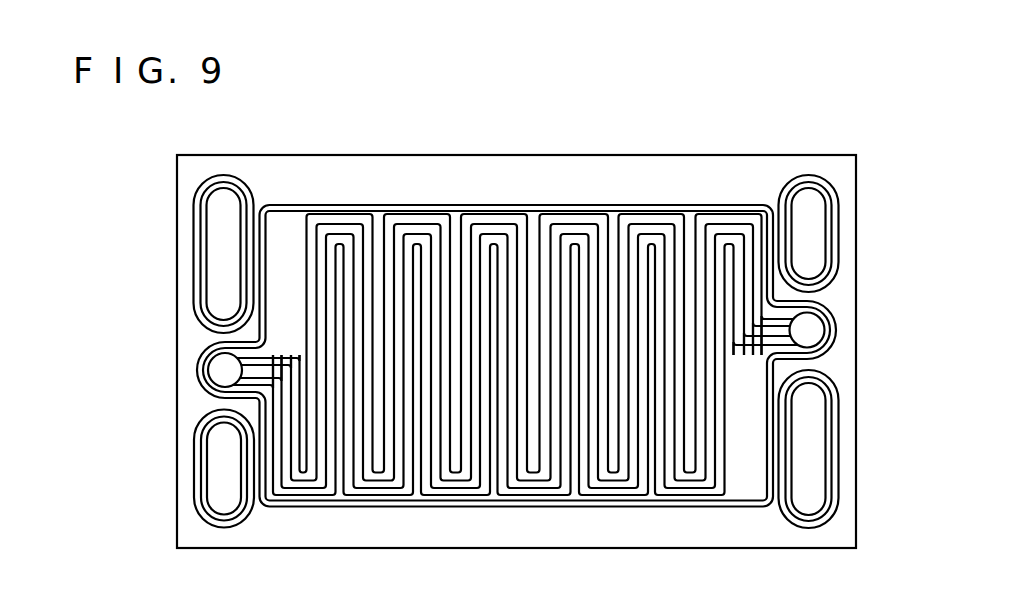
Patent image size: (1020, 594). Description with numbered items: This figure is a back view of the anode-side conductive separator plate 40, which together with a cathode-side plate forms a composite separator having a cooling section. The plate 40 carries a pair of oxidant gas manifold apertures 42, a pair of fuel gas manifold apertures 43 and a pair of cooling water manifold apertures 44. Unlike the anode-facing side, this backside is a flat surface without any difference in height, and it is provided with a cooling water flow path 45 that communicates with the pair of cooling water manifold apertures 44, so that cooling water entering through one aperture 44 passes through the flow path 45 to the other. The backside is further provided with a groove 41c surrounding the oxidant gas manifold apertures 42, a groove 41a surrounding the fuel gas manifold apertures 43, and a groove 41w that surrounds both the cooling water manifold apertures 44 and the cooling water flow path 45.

The anode-side conductive separator plate 40 is at (516, 307).
The groove 41a is at (178, 469).
The groove 41c is at (236, 215).
The groove 41w is at (515, 296).
The oxidant gas manifold apertures 42 is at (508, 351).
The fuel gas manifold apertures 43 is at (510, 347).
The cooling water manifold apertures 44 is at (508, 345).
The cooling water flow path 45 is at (340, 231).